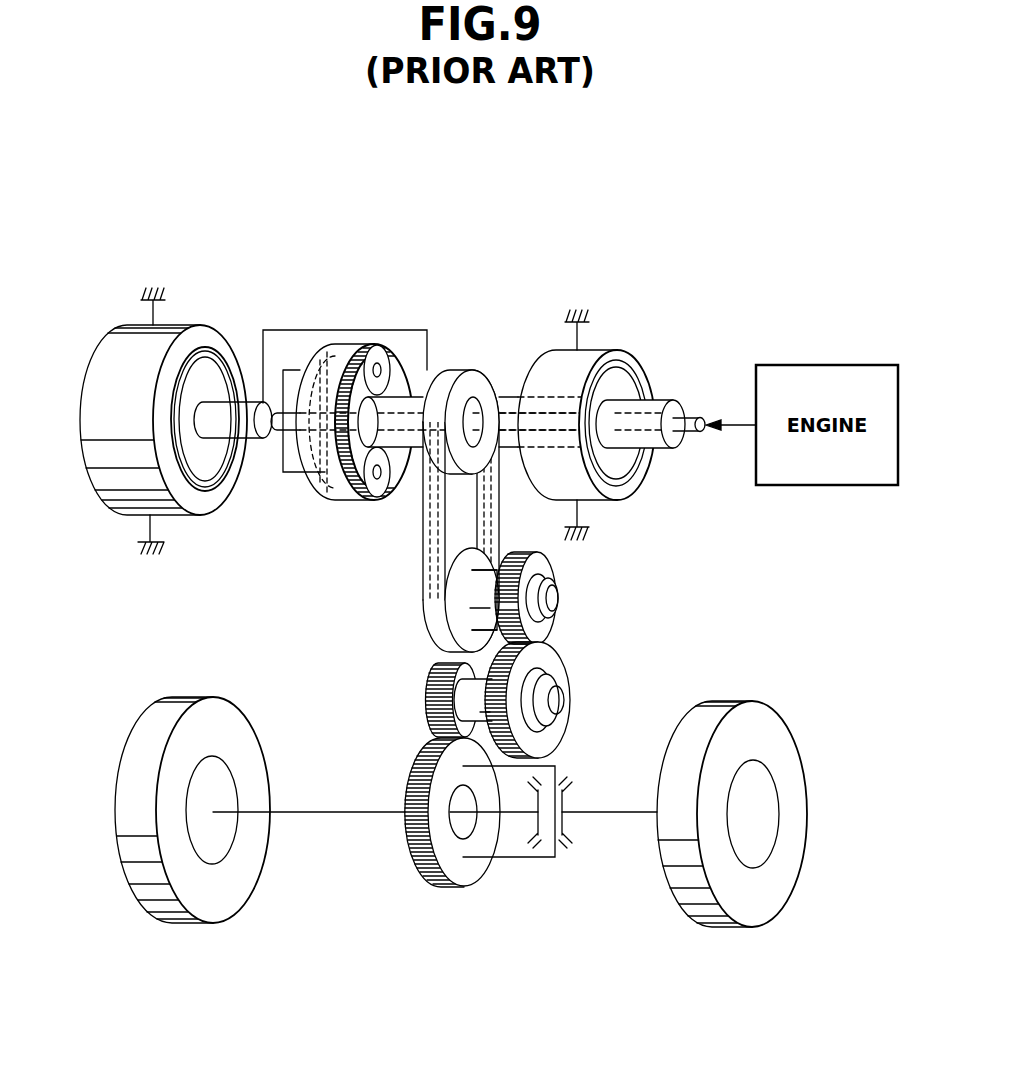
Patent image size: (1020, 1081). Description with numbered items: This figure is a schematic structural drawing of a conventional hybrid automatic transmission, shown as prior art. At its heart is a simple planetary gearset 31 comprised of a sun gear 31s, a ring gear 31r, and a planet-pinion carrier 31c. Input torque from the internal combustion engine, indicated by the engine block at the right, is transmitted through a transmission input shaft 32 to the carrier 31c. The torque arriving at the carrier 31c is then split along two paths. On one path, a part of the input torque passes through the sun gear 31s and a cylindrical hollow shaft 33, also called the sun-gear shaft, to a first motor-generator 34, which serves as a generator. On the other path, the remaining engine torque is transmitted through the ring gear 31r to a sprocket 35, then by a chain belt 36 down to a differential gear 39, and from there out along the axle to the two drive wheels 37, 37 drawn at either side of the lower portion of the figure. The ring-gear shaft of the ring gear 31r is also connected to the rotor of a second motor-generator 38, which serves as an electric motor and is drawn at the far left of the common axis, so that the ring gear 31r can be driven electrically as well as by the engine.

The simple planetary gearset 31 is at (253, 236).
The planet-pinion carrier 31c is at (294, 332).
The ring gear 31r is at (318, 345).
The sun gear 31s is at (353, 420).
The transmission input shaft 32 is at (693, 417).
The cylindrical hollow shaft 33 is at (505, 390).
The first motor-generator 34 is at (619, 388).
The sprocket 35 is at (467, 377).
The chain belt 36 is at (422, 546).
The drive wheels 37 is at (125, 803).
The second motor-generator 38 is at (205, 378).
The differential gear 39 is at (572, 760).